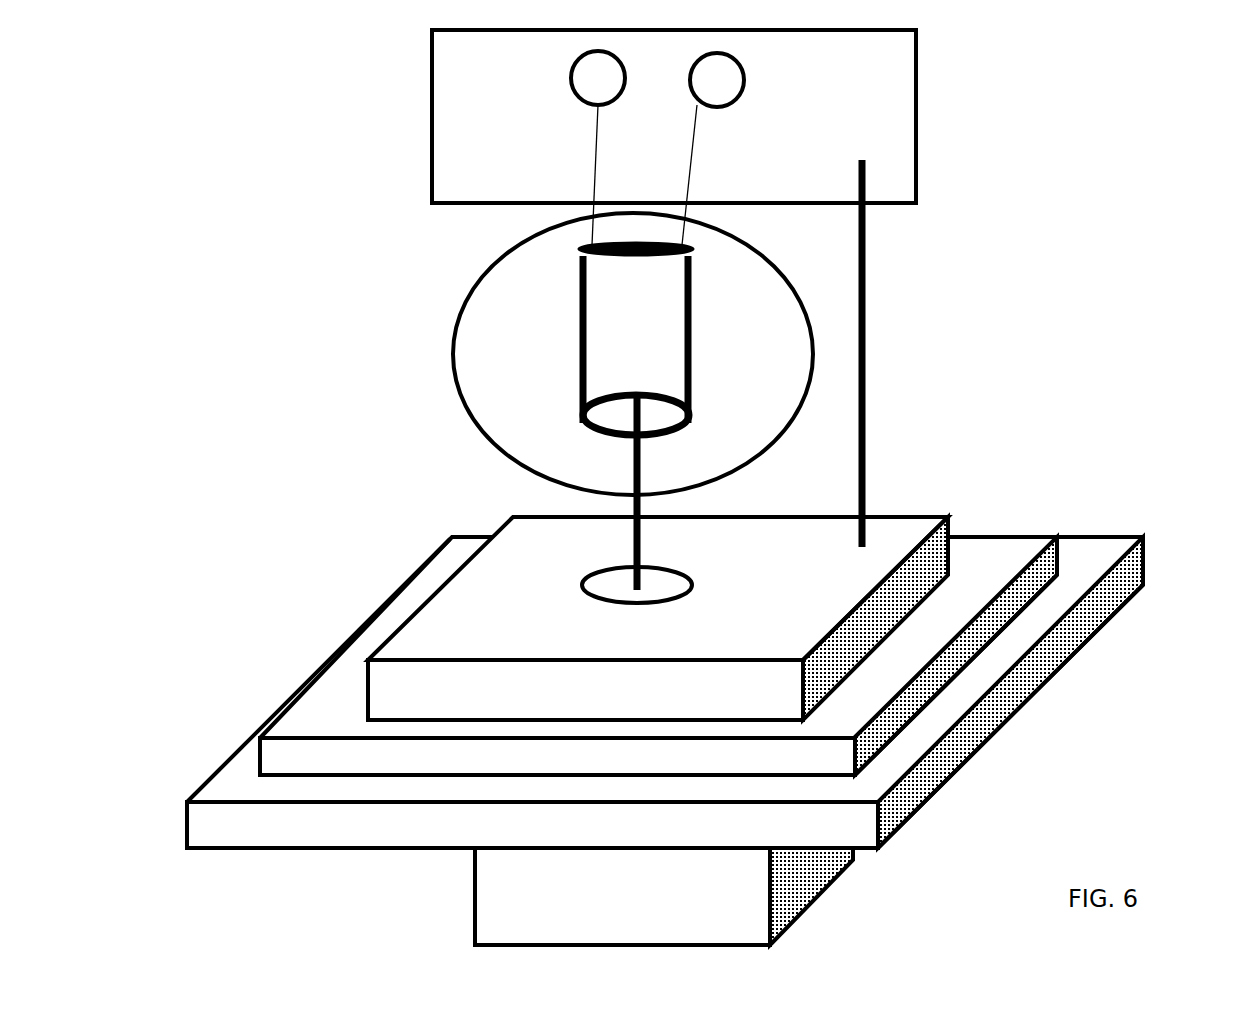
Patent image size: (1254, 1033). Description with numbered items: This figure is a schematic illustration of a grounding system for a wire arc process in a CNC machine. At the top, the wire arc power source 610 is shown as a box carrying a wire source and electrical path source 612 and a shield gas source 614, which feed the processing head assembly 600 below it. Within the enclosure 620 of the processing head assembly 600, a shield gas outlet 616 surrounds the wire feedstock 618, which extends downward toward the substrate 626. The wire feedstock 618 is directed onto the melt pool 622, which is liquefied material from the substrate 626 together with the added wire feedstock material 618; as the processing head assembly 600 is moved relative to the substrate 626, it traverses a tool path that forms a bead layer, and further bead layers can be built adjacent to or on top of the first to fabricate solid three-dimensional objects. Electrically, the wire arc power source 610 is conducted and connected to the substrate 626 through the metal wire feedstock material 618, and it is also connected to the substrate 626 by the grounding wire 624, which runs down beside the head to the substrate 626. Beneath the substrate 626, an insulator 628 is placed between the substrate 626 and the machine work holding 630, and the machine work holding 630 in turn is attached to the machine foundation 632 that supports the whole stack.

The processing head assembly 600 is at (910, 291).
The wire arc power source 610 is at (892, 133).
The wire source and electrical path source 612 is at (583, 87).
The shield gas source 614 is at (745, 78).
The shield gas outlet 616 is at (617, 422).
The wire feedstock 618 is at (643, 482).
The probe assembly enclosure 620 is at (472, 420).
The melt pool 622 is at (653, 585).
The grounding wire 624 is at (865, 407).
The substrate 626 is at (917, 570).
The insulator 628 is at (1033, 572).
The machine work holding 630 is at (1067, 633).
The machine foundation 632 is at (733, 925).